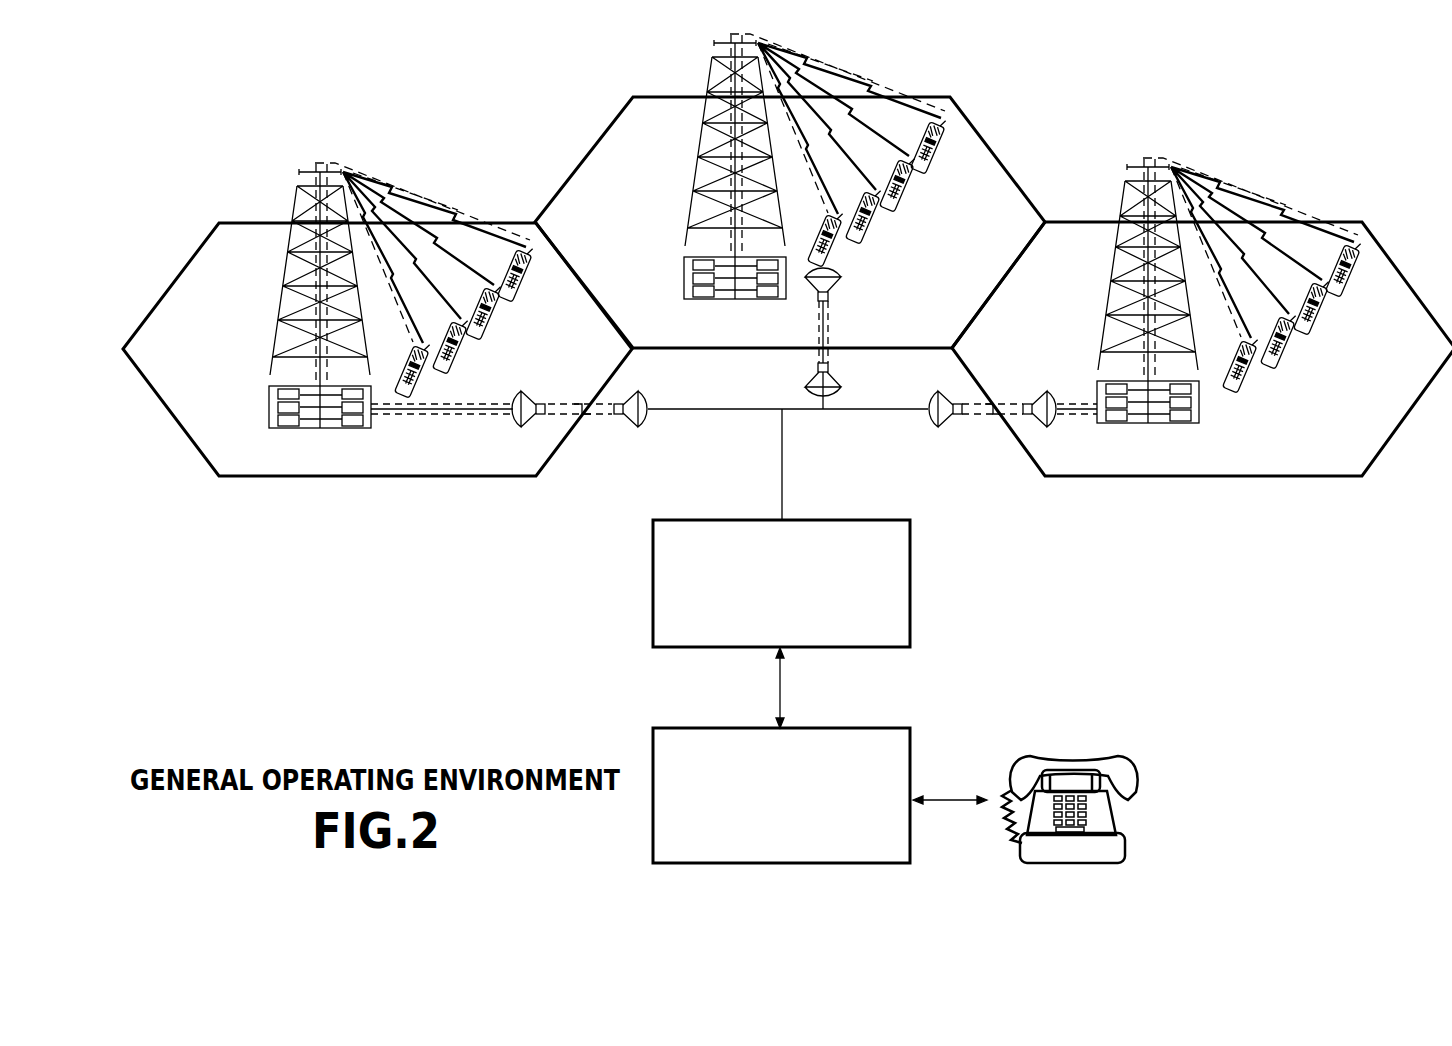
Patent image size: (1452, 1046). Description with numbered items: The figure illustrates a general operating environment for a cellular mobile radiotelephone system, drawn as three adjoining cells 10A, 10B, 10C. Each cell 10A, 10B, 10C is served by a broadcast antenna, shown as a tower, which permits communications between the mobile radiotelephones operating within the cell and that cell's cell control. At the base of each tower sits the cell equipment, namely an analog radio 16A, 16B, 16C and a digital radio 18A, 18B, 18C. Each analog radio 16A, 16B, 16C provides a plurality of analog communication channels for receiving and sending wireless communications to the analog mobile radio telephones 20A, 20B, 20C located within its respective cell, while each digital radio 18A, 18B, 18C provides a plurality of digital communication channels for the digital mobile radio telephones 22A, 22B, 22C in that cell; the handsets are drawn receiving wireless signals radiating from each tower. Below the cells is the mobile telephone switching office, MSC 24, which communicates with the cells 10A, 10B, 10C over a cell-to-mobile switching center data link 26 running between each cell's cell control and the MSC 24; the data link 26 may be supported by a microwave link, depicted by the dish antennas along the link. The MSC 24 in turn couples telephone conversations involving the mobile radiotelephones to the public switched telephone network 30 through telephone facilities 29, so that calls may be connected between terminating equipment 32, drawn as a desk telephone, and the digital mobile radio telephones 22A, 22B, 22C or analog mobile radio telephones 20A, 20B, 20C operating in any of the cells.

The cell 10A is at (222, 223).
The cell 10B is at (928, 97).
The cell 10C is at (1338, 222).
The analog radio 16A is at (272, 412).
The analog radio 16B is at (685, 284).
The analog radio 16C is at (1099, 408).
The digital radio 18A is at (365, 412).
The digital radio 18B is at (781, 284).
The digital radio 18C is at (1194, 408).
The analog mobile radio telephone 20A is at (419, 376).
The analog mobile radio telephone 20B is at (832, 245).
The analog mobile radio telephone 20C is at (1247, 371).
The digital mobile radio telephone 22A is at (490, 318).
The digital mobile radio telephone 22B is at (904, 190).
The digital mobile radio telephone 22C is at (1318, 313).
The MSC 24 is at (850, 520).
The cell-to-mobile switching center data link 26 is at (715, 409).
The telephone facilities 29 is at (778, 671).
The public switched telephone network 30 is at (852, 728).
The terminating equipment 32 is at (1073, 753).